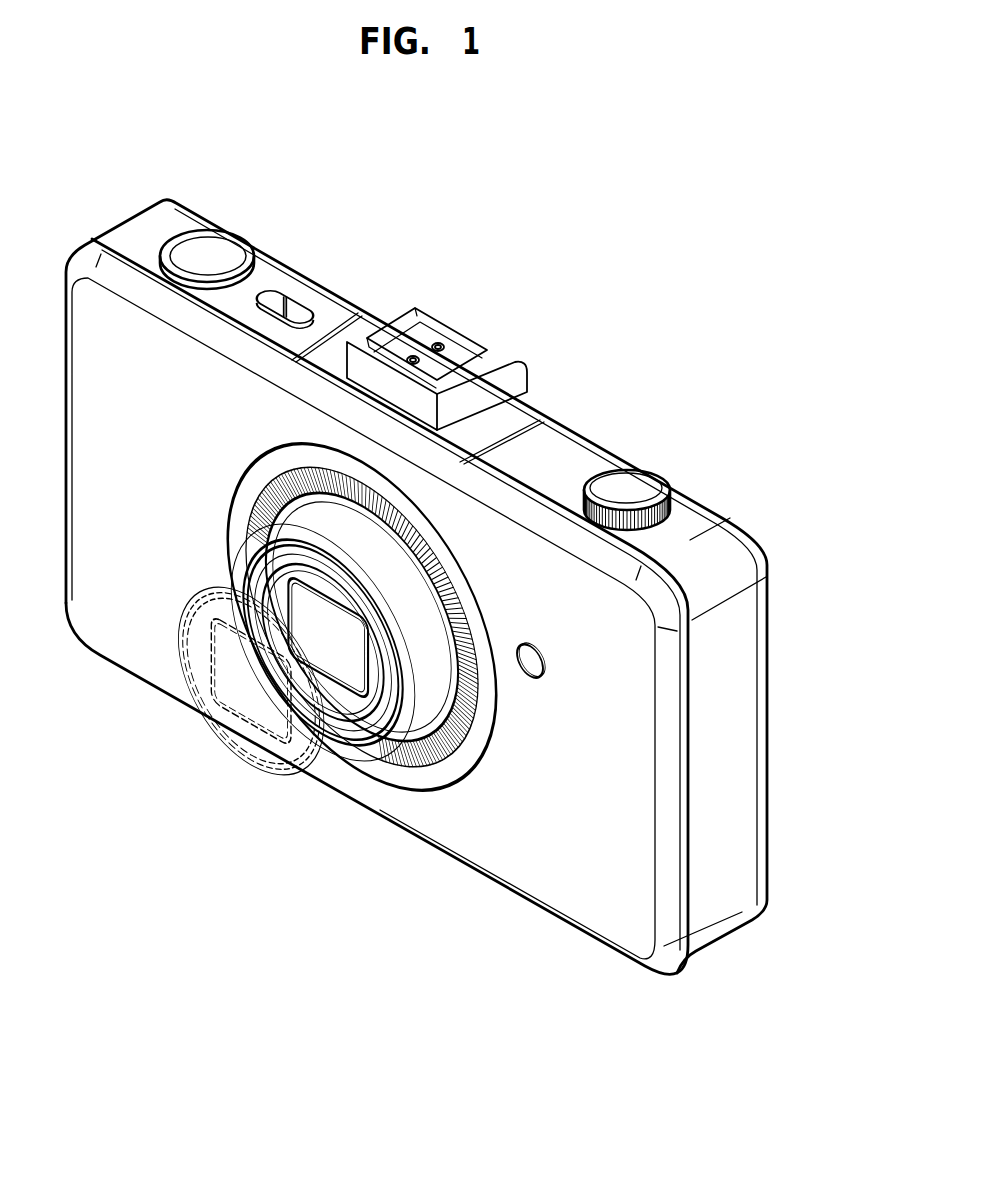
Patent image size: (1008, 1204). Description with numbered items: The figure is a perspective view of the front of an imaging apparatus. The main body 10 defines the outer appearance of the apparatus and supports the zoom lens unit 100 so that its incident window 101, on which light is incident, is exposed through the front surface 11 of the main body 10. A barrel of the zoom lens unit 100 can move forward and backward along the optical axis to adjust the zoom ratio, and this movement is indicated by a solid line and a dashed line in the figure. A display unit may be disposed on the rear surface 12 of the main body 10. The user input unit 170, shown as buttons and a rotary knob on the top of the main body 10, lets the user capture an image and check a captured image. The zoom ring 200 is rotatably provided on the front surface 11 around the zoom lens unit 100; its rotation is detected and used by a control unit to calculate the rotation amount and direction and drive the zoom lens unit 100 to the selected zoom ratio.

The main body 10 is at (556, 462).
The front surface 11 is at (608, 912).
The rear surface 12 is at (768, 792).
The zoom lens unit 100 is at (270, 673).
The incident window 101 is at (352, 672).
The user input unit 170 is at (273, 297).
The zoom ring 200 is at (437, 773).